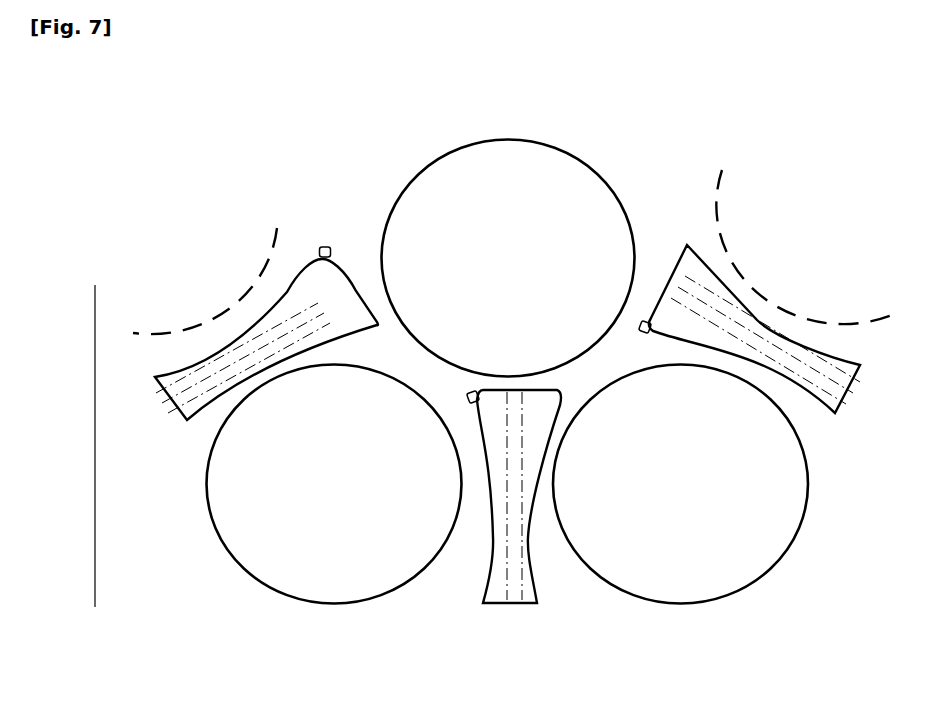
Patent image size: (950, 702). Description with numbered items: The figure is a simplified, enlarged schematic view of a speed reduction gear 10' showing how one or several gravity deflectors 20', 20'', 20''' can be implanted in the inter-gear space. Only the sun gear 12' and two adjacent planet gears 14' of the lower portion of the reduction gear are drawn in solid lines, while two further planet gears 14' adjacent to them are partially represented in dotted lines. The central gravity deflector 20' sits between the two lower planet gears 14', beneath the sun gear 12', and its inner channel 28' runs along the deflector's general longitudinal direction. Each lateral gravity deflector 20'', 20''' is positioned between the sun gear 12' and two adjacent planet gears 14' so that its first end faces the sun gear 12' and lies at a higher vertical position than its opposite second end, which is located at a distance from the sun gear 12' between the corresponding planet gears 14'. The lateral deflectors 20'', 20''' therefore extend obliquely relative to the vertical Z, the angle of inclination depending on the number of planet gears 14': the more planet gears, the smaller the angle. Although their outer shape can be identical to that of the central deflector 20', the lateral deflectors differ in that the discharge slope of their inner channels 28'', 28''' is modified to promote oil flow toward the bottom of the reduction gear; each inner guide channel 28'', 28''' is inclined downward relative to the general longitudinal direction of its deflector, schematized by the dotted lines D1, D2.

The speed reduction gear 10' is at (471, 380).
The sun gear 12' is at (527, 239).
The planet gears 14' is at (514, 416).
The gravity deflector 20' is at (460, 532).
The lateral gravity deflector 20'' is at (260, 383).
The lateral gravity deflector 20''' is at (758, 390).
The inner channel 28' is at (585, 535).
The inner guide channel 28'' is at (224, 358).
The inner guide channel 28''' is at (787, 340).
The general longitudinal direction of the deflector D1 is at (371, 280).
The general longitudinal direction of the deflector D2 is at (659, 277).
The vertical Z is at (93, 428).